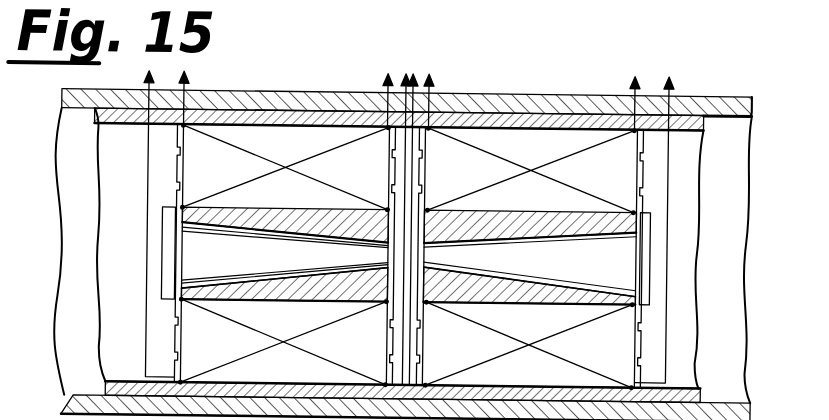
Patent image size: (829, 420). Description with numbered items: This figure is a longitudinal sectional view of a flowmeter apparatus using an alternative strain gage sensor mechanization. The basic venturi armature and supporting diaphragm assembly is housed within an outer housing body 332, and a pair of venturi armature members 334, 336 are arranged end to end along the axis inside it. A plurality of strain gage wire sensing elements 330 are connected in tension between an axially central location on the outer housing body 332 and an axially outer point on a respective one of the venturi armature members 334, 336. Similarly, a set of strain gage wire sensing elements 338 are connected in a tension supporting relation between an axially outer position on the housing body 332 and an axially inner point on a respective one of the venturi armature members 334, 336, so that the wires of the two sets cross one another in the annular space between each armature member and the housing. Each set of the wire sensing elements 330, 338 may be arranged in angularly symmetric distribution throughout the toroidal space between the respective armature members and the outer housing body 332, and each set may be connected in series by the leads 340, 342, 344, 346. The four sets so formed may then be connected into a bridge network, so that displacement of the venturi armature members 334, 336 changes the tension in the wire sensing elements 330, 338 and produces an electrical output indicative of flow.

The strain gage wire sensing elements 330 is at (329, 152).
The outer housing body 332 is at (254, 95).
The venturi armature member 334 is at (277, 263).
The venturi armature member 336 is at (557, 265).
The strain gage wire sensing elements 338 is at (240, 153).
The lead 340 is at (160, 236).
The lead 342 is at (388, 251).
The lead 344 is at (424, 257).
The lead 346 is at (651, 250).